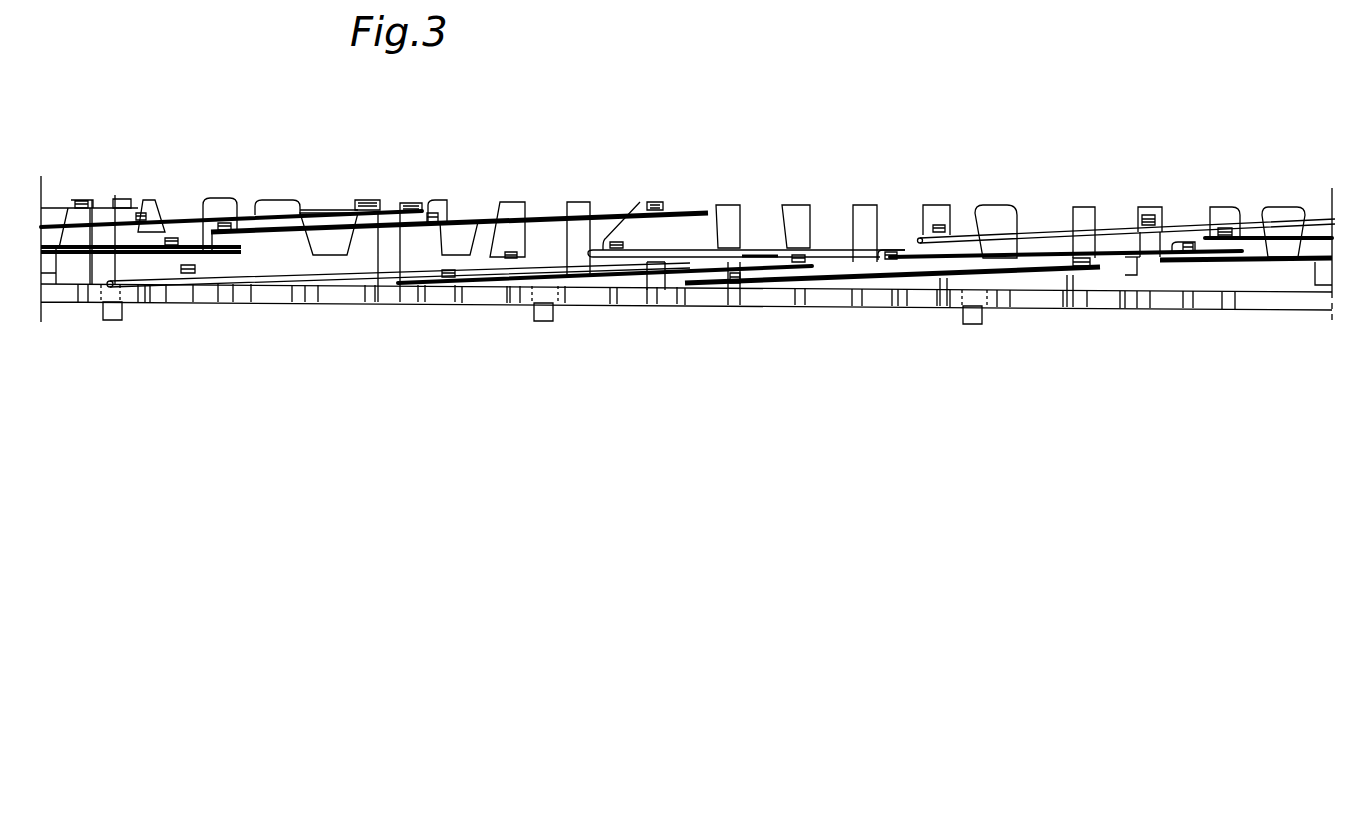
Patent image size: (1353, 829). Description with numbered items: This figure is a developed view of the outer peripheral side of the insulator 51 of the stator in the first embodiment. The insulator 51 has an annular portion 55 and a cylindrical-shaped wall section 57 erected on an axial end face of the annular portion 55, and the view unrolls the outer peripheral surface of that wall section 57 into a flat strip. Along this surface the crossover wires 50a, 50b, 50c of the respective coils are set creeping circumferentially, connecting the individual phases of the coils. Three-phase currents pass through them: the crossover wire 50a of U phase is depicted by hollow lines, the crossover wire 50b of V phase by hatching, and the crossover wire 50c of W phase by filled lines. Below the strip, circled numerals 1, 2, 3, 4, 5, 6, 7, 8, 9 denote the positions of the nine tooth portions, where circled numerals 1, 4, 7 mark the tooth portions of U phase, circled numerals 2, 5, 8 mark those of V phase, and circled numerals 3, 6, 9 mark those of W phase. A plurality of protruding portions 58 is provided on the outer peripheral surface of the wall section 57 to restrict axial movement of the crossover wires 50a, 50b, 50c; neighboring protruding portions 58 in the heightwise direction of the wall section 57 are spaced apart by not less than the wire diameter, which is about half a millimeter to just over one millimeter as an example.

The crossover wire 50a is at (843, 248).
The crossover wire 50b is at (452, 205).
The crossover wire 50c is at (200, 214).
The insulator 51 is at (578, 201).
The annular portion 55 is at (713, 298).
The wall section 57 is at (727, 230).
The protruding portion 58 is at (513, 252).
The tooth portion position 1 is at (112, 303).
The tooth portion position 2 is at (257, 306).
The tooth portion position 3 is at (399, 306).
The tooth portion position 4 is at (543, 304).
The tooth portion position 5 is at (687, 307).
The tooth portion position 6 is at (829, 307).
The tooth portion position 7 is at (972, 307).
The tooth portion position 8 is at (1115, 308).
The tooth portion position 9 is at (1258, 309).